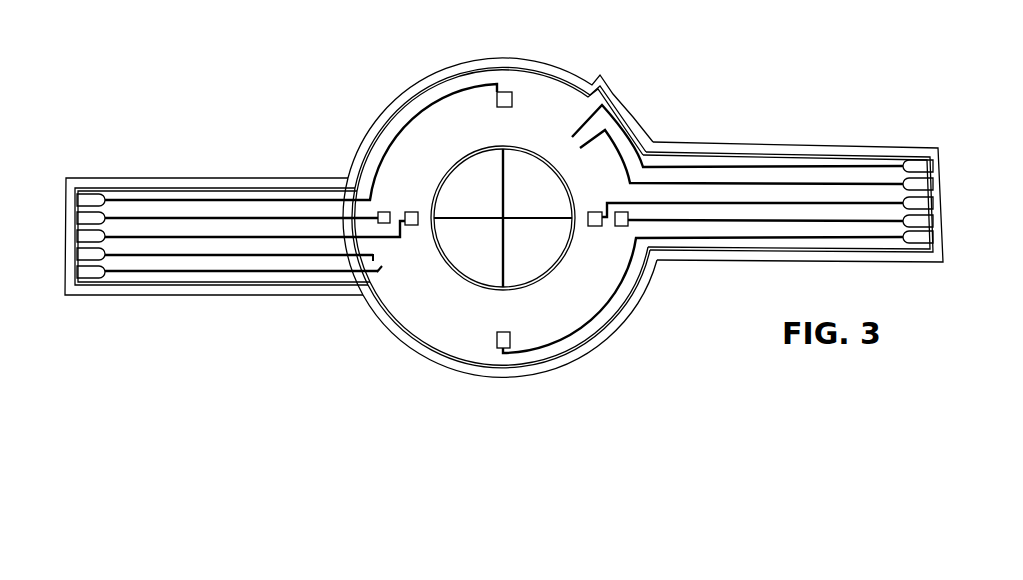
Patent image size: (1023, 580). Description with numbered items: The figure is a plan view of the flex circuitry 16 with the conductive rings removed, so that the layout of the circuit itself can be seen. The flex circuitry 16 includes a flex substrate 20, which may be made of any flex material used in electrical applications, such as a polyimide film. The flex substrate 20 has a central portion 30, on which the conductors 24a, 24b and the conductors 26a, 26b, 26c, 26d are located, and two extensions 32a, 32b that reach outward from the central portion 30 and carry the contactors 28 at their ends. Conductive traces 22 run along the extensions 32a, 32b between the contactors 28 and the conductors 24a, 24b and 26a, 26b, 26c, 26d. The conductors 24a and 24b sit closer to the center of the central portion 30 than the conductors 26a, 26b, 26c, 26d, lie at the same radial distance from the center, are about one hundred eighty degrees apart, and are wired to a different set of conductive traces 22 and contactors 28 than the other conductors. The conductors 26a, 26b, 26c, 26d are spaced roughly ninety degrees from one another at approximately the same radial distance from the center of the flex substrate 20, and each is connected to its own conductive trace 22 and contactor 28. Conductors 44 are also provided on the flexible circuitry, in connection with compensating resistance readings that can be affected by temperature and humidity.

The flex circuitry 16 is at (589, 80).
The flex substrate 20 is at (437, 322).
The conductive traces 22 is at (300, 217).
The conductor 24a is at (412, 212).
The conductor 24b is at (598, 229).
The conductor 26a is at (385, 212).
The conductor 26b is at (512, 93).
The conductor 26c is at (624, 212).
The conductor 26d is at (511, 338).
The contactors 28 is at (86, 272).
The central portion 30 is at (407, 307).
The extension 32a is at (214, 178).
The extension 32b is at (846, 146).
The conductors 44 is at (378, 268).